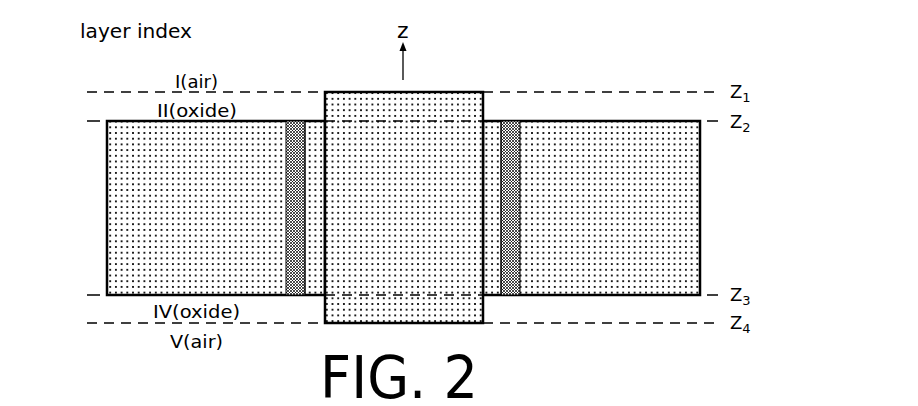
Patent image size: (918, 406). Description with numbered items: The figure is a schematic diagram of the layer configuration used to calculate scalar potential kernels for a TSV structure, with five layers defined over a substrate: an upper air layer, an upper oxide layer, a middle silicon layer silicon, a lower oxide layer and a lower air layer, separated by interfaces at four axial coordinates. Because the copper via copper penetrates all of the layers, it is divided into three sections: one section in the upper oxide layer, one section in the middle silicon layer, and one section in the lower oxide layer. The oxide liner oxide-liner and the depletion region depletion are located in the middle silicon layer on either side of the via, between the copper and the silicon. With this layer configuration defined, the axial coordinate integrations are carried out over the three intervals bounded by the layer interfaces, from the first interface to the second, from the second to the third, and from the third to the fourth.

The copper via copper is at (404, 207).
The silicon layer silicon is at (403, 208).
The oxide liner oxide-liner is at (501, 148).
The depletion region depletion is at (515, 221).